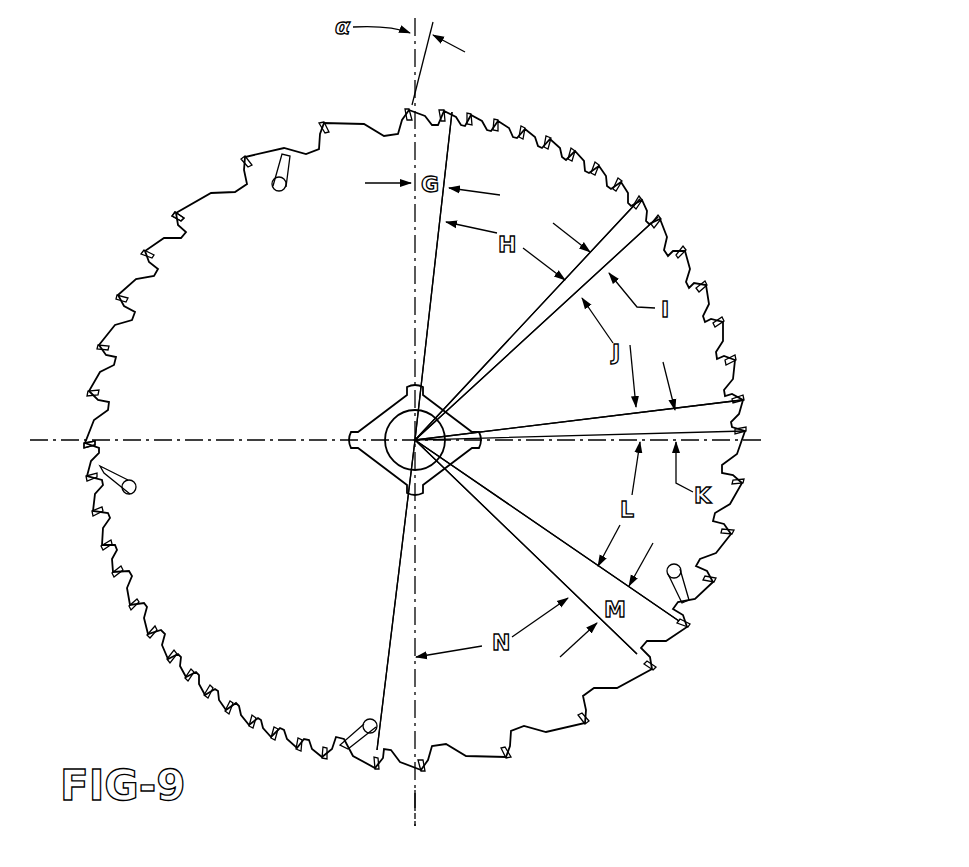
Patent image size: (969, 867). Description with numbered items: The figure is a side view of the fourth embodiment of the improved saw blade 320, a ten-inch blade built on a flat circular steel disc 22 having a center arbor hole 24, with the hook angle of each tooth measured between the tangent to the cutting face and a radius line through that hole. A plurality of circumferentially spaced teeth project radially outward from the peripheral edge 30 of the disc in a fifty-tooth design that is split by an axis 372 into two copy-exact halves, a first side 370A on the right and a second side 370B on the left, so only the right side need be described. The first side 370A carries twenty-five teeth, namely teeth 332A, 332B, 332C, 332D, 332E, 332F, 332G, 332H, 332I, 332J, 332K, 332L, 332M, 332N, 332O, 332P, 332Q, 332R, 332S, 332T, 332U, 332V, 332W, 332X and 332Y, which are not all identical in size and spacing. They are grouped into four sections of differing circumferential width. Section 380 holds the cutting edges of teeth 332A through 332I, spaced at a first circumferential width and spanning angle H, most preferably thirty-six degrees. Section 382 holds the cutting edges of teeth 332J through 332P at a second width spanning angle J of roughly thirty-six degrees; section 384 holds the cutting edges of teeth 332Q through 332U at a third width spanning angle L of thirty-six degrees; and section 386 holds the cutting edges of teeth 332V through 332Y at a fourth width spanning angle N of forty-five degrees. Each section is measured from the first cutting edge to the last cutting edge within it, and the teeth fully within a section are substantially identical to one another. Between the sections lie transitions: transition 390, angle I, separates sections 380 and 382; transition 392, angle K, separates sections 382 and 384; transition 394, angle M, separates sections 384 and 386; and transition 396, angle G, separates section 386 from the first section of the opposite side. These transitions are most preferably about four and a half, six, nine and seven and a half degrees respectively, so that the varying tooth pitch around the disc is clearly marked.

The circular disc 22 is at (140, 392).
The center arbor hole 24 is at (392, 430).
The peripheral edge 30 is at (205, 193).
The saw blade 320 is at (183, 128).
The tooth 332A is at (452, 110).
The tooth 332B is at (478, 110).
The tooth 332C is at (500, 120).
The tooth 332D is at (525, 133).
The tooth 332E is at (548, 143).
The tooth 332F is at (573, 153).
The tooth 332G is at (597, 166).
The tooth 332H is at (620, 180).
The tooth 332I is at (642, 198).
The tooth 332J is at (663, 217).
The tooth 332K is at (685, 243).
The tooth 332L is at (702, 268).
The tooth 332M is at (715, 294).
The tooth 332N is at (725, 324).
The tooth 332O is at (735, 361).
The tooth 332P is at (742, 400).
The tooth 332Q is at (746, 432).
The tooth 332R is at (743, 483).
The tooth 332S is at (732, 532).
The tooth 332T is at (713, 582).
The tooth 332U is at (688, 626).
The tooth 332V is at (654, 668).
The tooth 332W is at (588, 722).
The tooth 332X is at (508, 757).
The tooth 332Y is at (422, 771).
The first side 370A is at (590, 665).
The second side 370B is at (203, 265).
The axis 372 is at (418, 827).
The first section 380 is at (558, 204).
The second section 382 is at (585, 370).
The third section 384 is at (583, 500).
The fourth section 386 is at (536, 693).
The transition 390 is at (540, 318).
The transition 392 is at (590, 421).
The transition 394 is at (550, 555).
The transition 396 is at (410, 262).